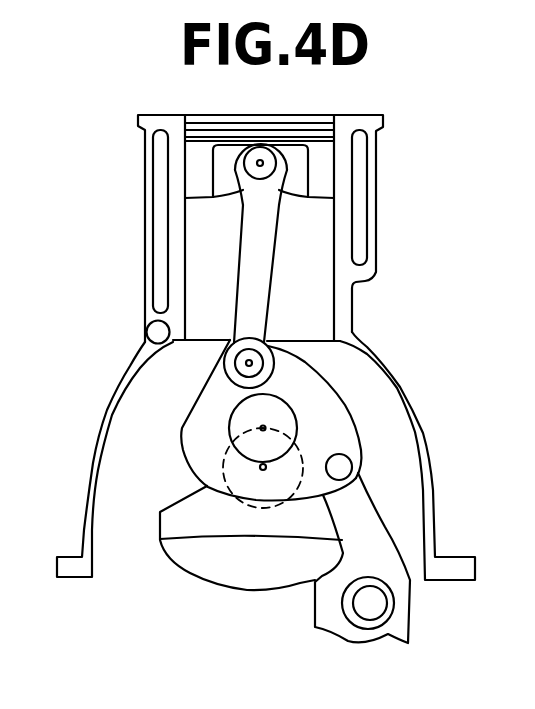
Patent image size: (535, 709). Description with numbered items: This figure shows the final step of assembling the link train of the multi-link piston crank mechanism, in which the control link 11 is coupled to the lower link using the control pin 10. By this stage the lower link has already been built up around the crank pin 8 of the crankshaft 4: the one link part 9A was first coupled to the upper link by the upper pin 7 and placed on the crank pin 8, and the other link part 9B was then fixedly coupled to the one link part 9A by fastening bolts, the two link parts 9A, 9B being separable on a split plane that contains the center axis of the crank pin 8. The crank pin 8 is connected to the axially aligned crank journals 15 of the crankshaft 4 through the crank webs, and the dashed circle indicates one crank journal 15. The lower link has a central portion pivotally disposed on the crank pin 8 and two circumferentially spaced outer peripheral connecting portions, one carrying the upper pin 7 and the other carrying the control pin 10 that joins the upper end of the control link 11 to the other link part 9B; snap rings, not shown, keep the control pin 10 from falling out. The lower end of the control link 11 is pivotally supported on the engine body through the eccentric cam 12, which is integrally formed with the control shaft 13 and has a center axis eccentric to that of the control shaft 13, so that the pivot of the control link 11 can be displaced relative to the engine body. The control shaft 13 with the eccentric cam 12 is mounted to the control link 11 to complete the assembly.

The crankshaft 4 is at (137, 504).
The upper pin 7 is at (271, 347).
The crank pin 8 is at (292, 403).
The one link part 9A is at (194, 433).
The other link part 9B is at (333, 417).
The control pin 10 is at (343, 465).
The control link 11 is at (400, 552).
The eccentric cam 12 is at (342, 609).
The control shaft 13 is at (396, 597).
The crank journal 15 is at (190, 468).